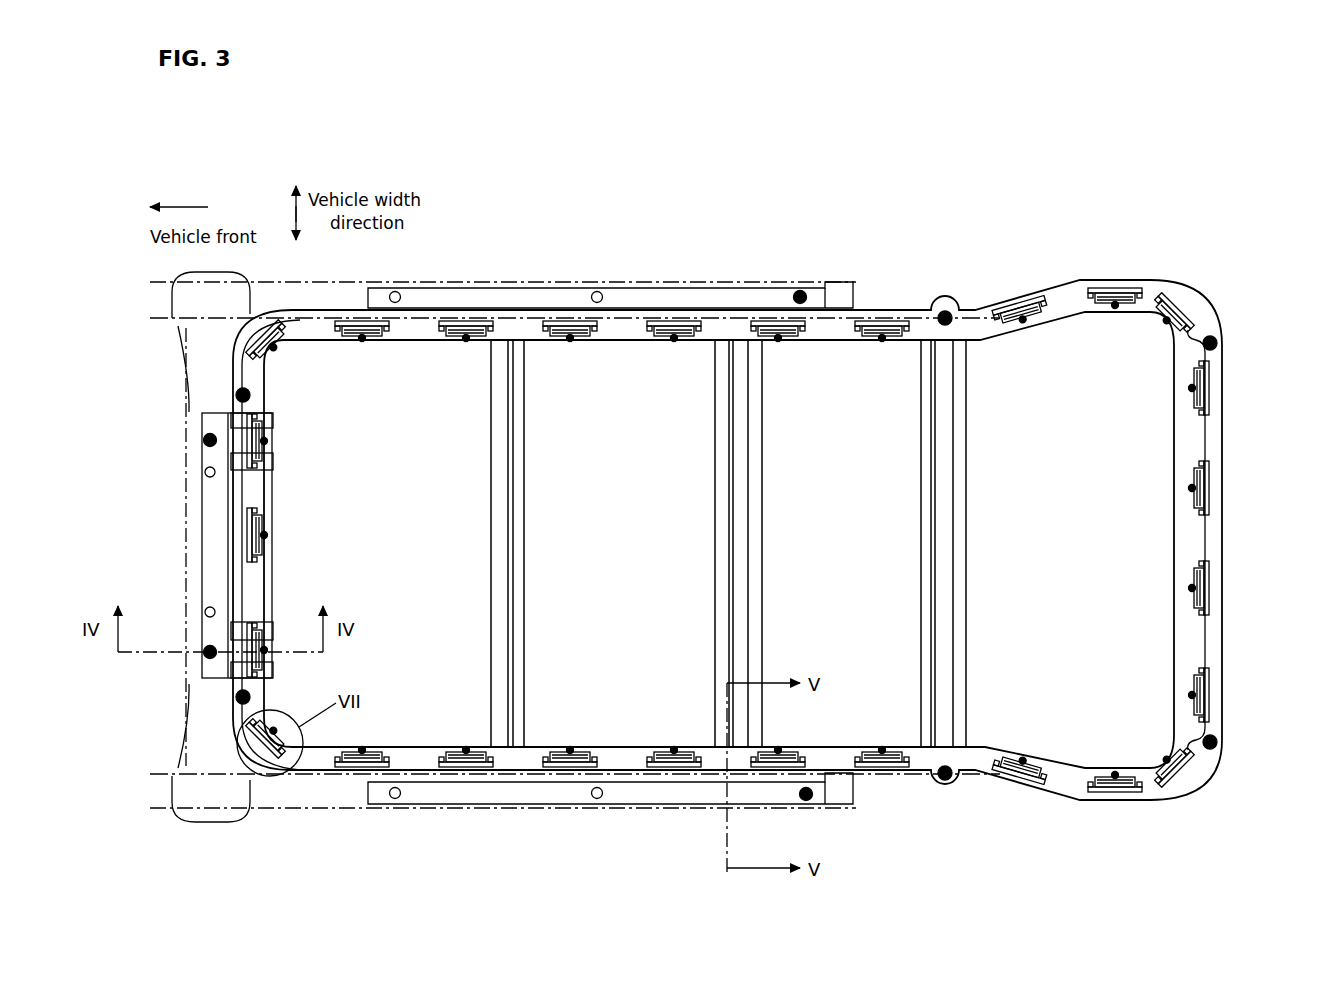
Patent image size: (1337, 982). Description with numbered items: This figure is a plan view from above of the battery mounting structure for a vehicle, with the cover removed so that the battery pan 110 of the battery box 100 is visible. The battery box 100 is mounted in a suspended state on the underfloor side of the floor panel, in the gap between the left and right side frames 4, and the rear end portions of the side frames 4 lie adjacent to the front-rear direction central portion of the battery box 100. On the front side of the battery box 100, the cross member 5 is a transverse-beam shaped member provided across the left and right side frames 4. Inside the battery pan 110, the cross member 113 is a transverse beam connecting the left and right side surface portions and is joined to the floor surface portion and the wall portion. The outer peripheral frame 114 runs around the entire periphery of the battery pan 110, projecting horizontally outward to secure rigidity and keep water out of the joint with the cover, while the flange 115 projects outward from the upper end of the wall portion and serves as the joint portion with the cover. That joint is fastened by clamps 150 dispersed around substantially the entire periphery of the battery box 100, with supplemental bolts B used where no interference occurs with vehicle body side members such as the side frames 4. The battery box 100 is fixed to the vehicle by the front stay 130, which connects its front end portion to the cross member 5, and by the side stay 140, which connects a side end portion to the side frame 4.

The battery box 100 is at (1228, 292).
The battery pan 110 is at (681, 466).
The cross member 113 is at (933, 568).
The outer peripheral frame 114 is at (890, 308).
The flange 115 is at (724, 328).
The front stay 130 is at (203, 493).
The side stay 140 is at (515, 295).
The clamp 150 is at (557, 338).
The side frame 4 is at (621, 283).
The cross member 5 is at (186, 382).
The bolt B is at (802, 294).